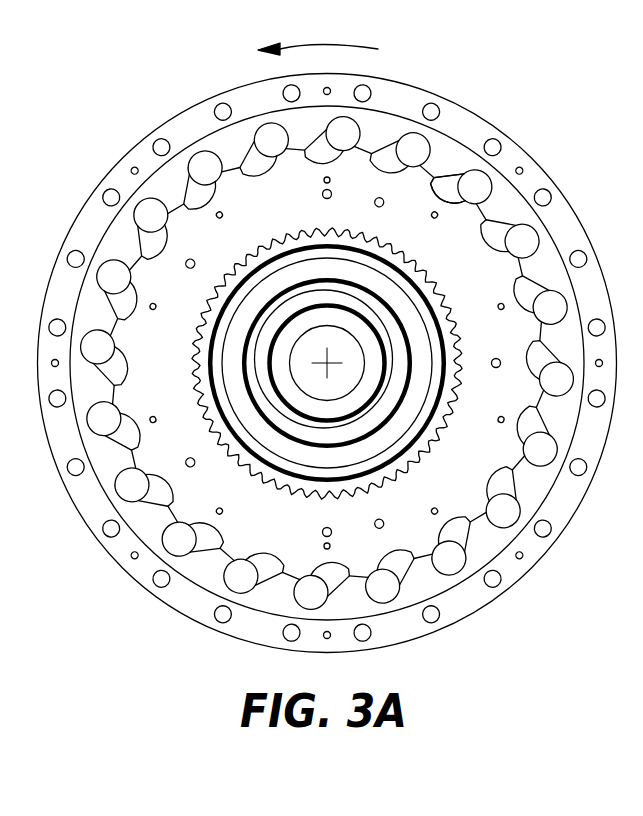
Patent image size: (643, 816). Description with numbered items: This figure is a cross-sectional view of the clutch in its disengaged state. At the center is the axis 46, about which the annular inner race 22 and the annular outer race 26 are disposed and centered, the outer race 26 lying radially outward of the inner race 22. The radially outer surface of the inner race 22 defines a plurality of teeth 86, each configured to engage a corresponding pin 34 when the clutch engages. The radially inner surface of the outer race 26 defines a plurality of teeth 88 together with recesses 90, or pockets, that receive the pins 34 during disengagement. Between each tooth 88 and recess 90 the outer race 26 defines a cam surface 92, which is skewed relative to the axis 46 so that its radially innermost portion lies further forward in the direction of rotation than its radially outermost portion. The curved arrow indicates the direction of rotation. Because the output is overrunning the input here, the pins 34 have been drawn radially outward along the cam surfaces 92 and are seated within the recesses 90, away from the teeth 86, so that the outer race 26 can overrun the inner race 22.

The inner race 22 is at (433, 488).
The outer race 26 is at (487, 552).
The pin 34 is at (482, 193).
The axis 46 is at (328, 363).
The tooth 86 is at (467, 210).
The tooth 88 is at (435, 170).
The recess 90 is at (478, 187).
The cam surface 92 is at (455, 177).